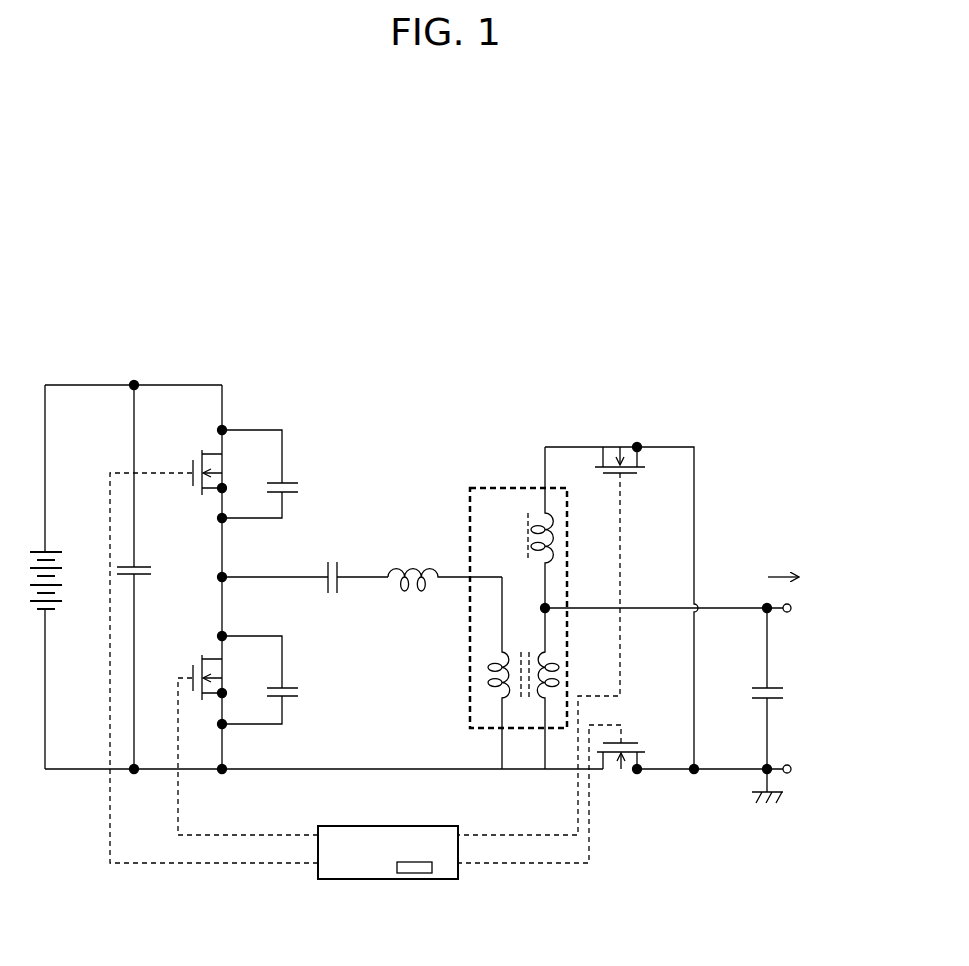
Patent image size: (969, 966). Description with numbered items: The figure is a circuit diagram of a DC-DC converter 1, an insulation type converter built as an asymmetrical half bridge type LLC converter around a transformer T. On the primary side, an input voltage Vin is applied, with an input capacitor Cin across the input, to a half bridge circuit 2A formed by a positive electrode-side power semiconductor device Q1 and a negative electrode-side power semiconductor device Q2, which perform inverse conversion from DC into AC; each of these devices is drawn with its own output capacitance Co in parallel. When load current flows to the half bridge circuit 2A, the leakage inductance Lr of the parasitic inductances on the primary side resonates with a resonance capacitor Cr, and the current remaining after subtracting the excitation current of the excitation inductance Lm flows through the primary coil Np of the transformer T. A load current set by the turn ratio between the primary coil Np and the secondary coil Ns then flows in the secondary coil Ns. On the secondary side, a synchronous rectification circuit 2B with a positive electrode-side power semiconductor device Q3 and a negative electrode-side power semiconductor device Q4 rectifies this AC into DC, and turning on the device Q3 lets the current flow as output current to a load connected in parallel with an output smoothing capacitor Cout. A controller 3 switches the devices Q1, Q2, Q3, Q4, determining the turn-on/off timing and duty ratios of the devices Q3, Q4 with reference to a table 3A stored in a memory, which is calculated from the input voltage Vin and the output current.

The DC-DC converter 1 is at (382, 348).
The half bridge circuit 2A is at (358, 530).
The synchronous rectification circuit 2B is at (738, 520).
The controller 3 is at (376, 826).
The table 3A is at (412, 873).
The transformer T is at (491, 488).
The positive electrode-side power semiconductor device Q1 is at (214, 656).
The negative electrode-side power semiconductor device Q2 is at (248, 745).
The positive electrode-side power semiconductor device Q3 is at (562, 641).
The negative electrode-side power semiconductor device Q4 is at (564, 794).
The output capacitance of switching element Co is at (275, 577).
The input capacitor Cin is at (152, 577).
The resonance capacitor Cr is at (305, 565).
The leakage inductance Lr is at (445, 564).
The excitation inductance Lm is at (530, 547).
The primary coil Np is at (498, 655).
The secondary coil Ns is at (553, 653).
The output smoothing capacitor Cout is at (793, 688).
The input voltage Vin is at (64, 582).